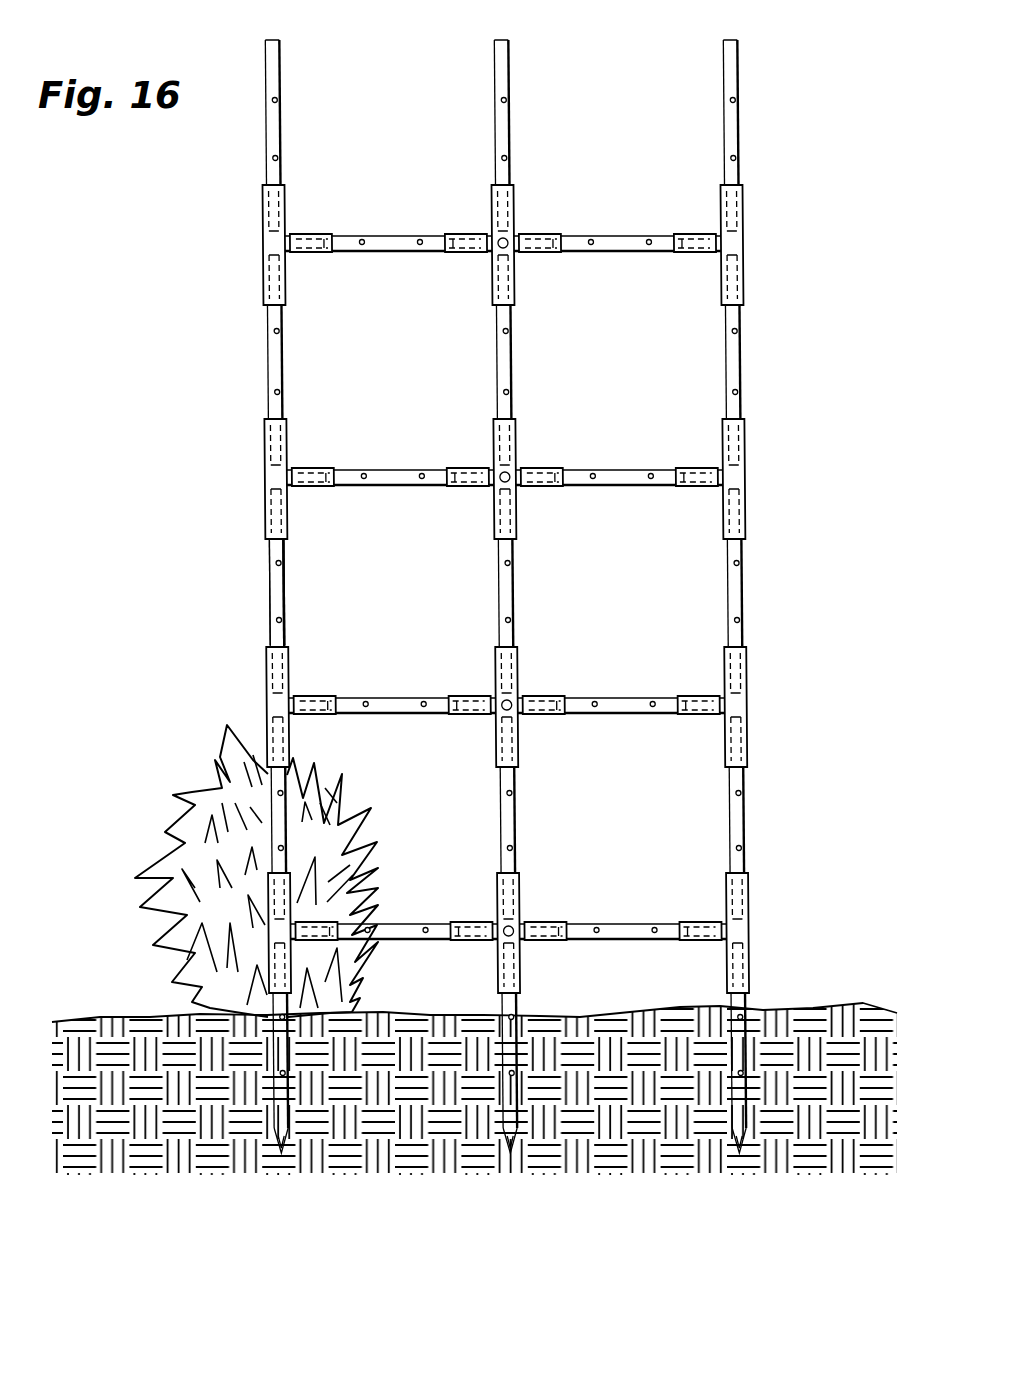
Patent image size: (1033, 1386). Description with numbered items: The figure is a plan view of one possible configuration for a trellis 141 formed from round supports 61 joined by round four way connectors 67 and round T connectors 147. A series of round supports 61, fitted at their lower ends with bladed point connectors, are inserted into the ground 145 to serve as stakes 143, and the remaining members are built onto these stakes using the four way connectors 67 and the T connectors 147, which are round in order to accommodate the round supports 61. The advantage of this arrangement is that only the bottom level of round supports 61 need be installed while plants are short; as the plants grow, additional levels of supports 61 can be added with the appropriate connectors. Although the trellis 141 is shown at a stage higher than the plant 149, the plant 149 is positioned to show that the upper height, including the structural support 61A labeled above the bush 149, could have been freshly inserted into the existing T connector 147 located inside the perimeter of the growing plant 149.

The trellis 141 is at (545, 636).
The stake 143 is at (284, 1112).
The ground 145 is at (148, 1137).
The T connector 147 is at (262, 237).
The plant 149 is at (195, 787).
The round support 61 is at (408, 481).
The structural support 61A is at (271, 548).
The round four way connector 67 is at (518, 235).